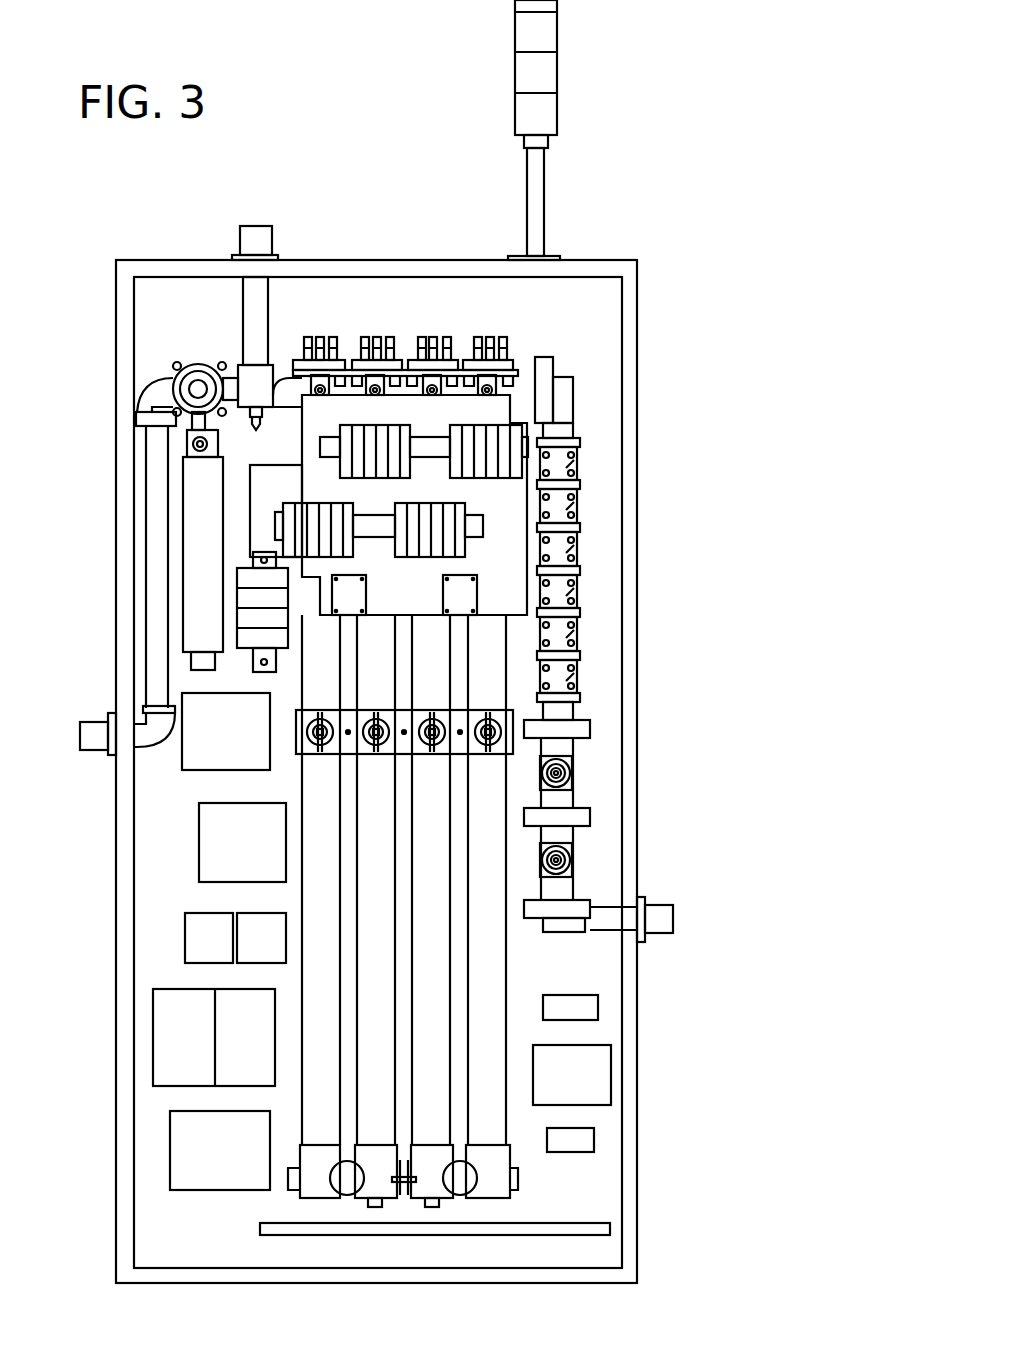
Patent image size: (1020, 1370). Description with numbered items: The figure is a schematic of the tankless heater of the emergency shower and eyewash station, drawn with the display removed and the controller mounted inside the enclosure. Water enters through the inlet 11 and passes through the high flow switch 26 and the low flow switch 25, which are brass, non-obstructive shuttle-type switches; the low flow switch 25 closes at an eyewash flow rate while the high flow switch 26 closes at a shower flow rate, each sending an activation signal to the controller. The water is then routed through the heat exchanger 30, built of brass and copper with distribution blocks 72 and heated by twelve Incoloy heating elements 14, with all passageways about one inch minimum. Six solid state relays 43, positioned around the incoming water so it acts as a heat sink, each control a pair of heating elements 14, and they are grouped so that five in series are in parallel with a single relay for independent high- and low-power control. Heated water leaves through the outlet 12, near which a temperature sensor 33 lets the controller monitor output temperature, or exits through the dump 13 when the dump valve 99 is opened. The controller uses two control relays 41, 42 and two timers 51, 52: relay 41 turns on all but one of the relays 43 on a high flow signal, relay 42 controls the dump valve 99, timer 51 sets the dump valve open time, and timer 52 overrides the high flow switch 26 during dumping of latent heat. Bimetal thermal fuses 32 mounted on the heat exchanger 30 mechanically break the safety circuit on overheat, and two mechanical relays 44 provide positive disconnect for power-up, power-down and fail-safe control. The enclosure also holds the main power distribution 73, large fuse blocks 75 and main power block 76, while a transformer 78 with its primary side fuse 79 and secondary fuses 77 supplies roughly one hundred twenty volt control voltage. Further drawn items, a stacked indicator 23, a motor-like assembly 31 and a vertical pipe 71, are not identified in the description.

The inlet 11 is at (653, 910).
The outlet 12 is at (260, 238).
The dump 13 is at (85, 737).
The heating elements 14 is at (487, 326).
The signal stack light 23 is at (557, 92).
The low flow switch 25 is at (577, 765).
The high flow switch 26 is at (572, 848).
The heat exchanger 30 is at (365, 1197).
The motors 31 is at (423, 517).
The bimetal thermal fuses 32 is at (498, 722).
The temperature sensor 33 is at (258, 417).
The control relay 41 is at (245, 620).
The control relay 42 is at (250, 645).
The solid state relays 43 is at (575, 680).
The mechanical relays 44 is at (172, 1058).
The timer 51 is at (241, 576).
The timer 52 is at (247, 598).
The pipe 71 is at (190, 536).
The distribution blocks 72 is at (453, 592).
The main power distribution 73 is at (200, 935).
The large fuse blocks 75 is at (220, 828).
The main power block 76 is at (183, 1137).
The secondary fuses 77 is at (588, 1010).
The transformer 78 is at (598, 1062).
The primary side fuse 79 is at (590, 1140).
The dump valve 99 is at (200, 368).